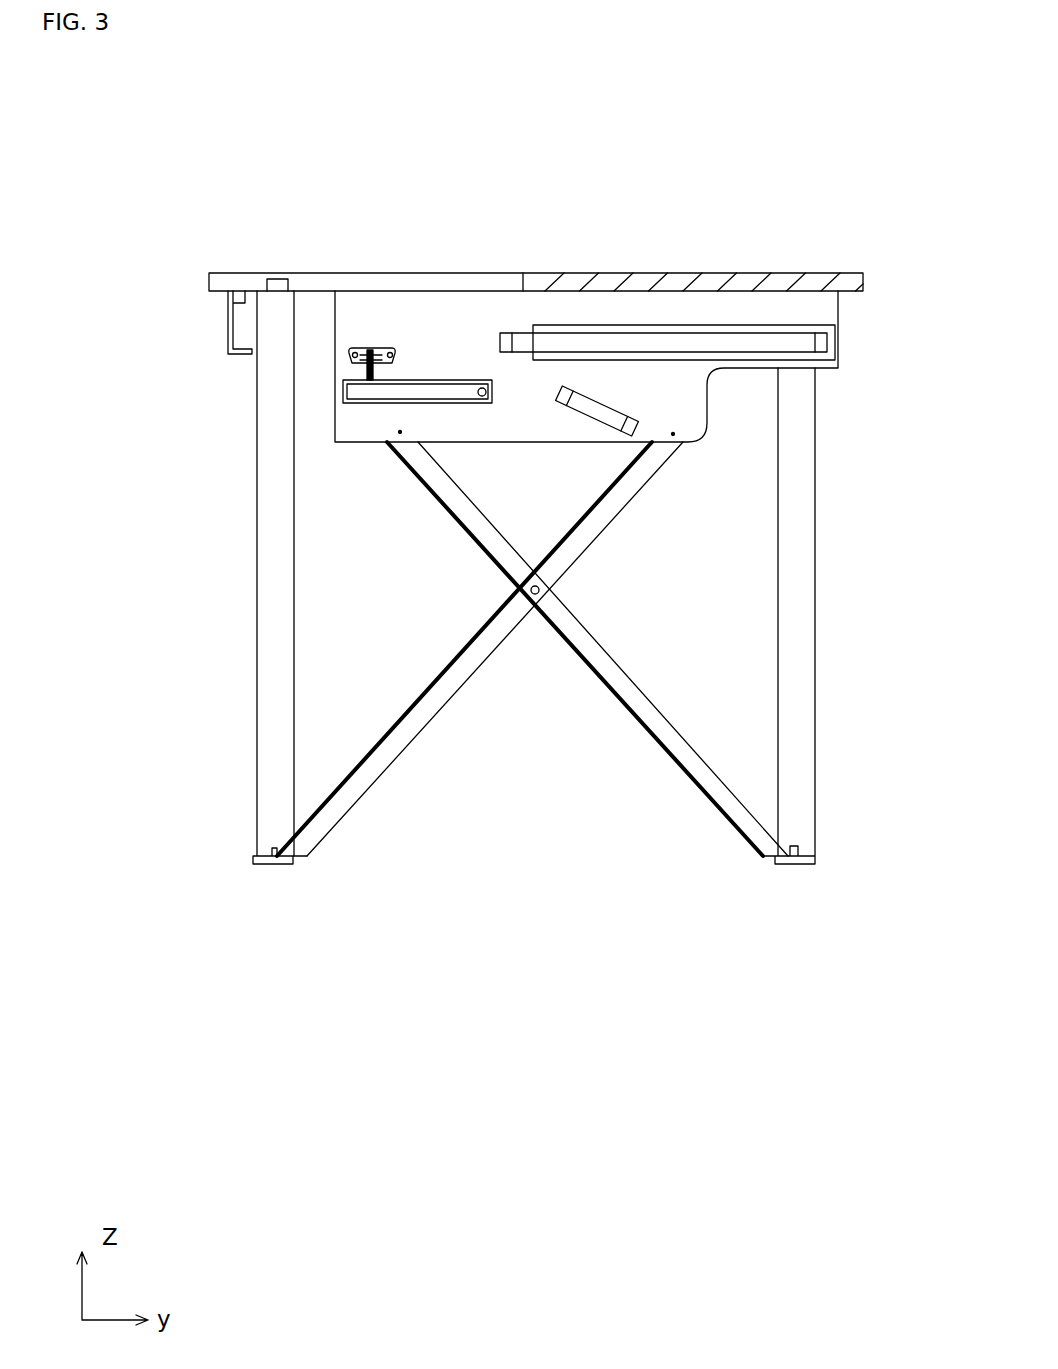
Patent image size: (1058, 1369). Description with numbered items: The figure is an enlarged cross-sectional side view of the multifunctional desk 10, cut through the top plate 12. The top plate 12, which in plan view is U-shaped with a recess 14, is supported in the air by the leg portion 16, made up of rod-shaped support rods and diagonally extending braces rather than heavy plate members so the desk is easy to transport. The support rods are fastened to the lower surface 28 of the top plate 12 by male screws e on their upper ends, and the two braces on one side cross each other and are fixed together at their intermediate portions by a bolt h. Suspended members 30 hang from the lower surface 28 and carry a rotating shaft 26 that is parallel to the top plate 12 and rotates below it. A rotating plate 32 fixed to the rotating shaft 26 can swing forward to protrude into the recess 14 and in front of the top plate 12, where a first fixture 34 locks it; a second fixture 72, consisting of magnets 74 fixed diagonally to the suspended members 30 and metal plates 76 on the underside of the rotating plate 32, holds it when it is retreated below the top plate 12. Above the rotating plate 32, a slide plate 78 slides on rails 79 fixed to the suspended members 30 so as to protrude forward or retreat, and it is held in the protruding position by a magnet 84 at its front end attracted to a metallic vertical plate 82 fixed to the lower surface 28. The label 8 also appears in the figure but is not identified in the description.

The wall 8 is at (109, 360).
The multifunctional desk 10 is at (221, 164).
The top plate 12 is at (717, 265).
The recess 14 is at (443, 273).
The leg portion 16 is at (223, 535).
The rotating shaft 26 is at (482, 388).
The lower surface 28 is at (323, 292).
The suspended member 30 is at (325, 421).
The rotating plate 32 is at (418, 358).
The first fixture 34 is at (367, 333).
The second fixture 72 is at (625, 395).
The magnet 74 is at (594, 416).
The metal plate 76 is at (370, 406).
The slide plate 78 is at (618, 316).
The rail 79 is at (790, 323).
The vertical plate 82 is at (228, 323).
The magnet 84 is at (518, 330).
The male screw e is at (280, 273).
The bolt h is at (540, 593).